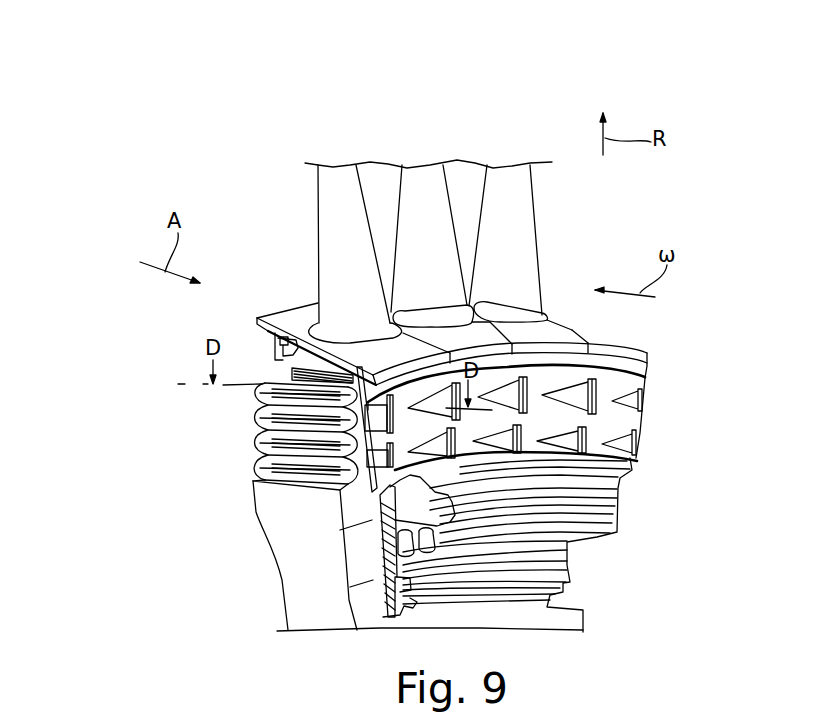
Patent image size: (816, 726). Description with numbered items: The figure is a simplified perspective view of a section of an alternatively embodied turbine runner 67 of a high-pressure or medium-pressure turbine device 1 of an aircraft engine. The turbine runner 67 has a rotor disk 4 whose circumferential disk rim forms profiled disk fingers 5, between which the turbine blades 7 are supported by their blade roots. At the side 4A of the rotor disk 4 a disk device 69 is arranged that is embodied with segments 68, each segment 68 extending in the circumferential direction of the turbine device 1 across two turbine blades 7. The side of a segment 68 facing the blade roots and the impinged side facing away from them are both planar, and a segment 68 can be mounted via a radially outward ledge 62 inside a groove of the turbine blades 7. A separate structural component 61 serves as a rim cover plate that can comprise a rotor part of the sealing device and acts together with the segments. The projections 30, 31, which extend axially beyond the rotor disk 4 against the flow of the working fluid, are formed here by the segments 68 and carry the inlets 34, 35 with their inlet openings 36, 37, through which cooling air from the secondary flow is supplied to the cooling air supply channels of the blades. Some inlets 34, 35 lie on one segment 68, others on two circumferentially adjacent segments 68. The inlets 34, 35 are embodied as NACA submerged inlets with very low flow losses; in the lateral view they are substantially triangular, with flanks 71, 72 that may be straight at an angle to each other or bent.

The turbine device 1 is at (176, 100).
The rotor disk 4 is at (307, 600).
The side of the rotor disk 4A is at (338, 478).
The disk fingers 5 is at (345, 458).
The turbine blade 7 is at (512, 187).
The projection 30 is at (626, 472).
The projection 31 is at (535, 380).
The inlet 34 is at (536, 430).
The inlet 35 is at (600, 362).
The inlet opening 36 is at (628, 468).
The inlet opening 37 is at (637, 402).
The structural component 61 is at (603, 522).
The ledge 62 is at (291, 371).
The turbine runner 67 is at (252, 180).
The segment 68 is at (617, 440).
The disk device 69 is at (655, 363).
The flank 71 is at (350, 405).
The flank 72 is at (350, 393).